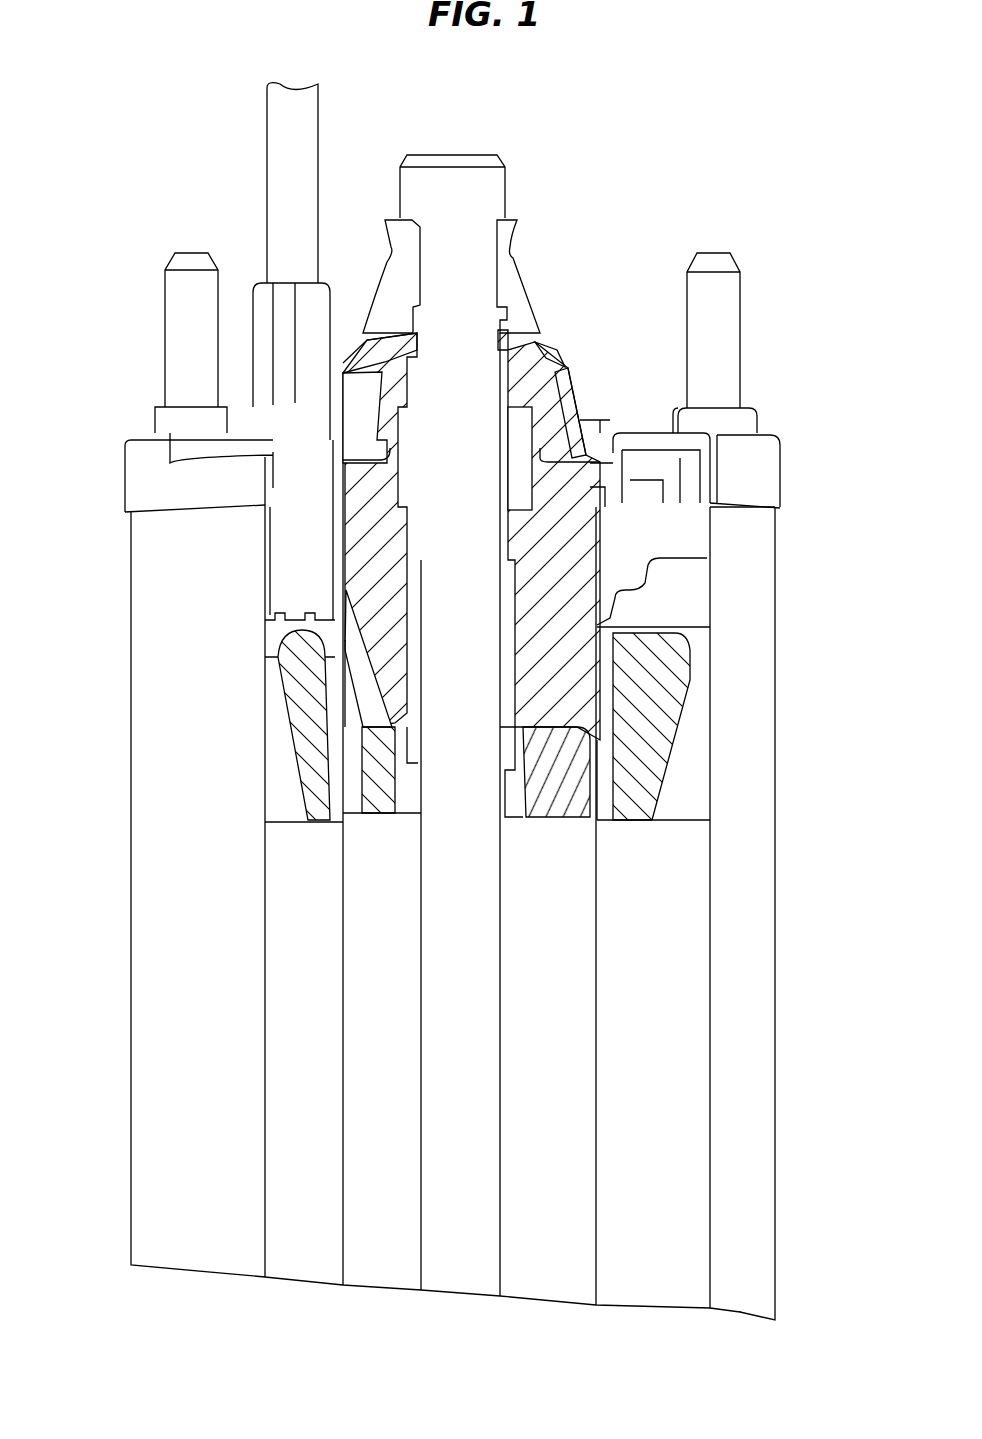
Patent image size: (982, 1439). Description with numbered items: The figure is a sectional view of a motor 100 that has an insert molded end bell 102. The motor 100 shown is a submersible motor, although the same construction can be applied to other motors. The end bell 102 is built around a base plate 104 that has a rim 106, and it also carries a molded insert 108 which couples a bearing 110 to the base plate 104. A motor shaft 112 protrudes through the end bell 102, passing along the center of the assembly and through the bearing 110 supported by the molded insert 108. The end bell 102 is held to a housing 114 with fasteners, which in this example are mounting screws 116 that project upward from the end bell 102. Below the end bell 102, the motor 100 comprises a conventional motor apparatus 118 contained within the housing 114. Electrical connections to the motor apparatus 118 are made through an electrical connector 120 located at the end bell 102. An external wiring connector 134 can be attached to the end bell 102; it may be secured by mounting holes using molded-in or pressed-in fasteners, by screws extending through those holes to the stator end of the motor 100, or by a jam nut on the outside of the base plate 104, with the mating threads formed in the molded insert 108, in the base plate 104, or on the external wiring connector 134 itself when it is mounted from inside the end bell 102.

The motor 100 is at (94, 730).
The insert molded end bell 102 is at (603, 418).
The base plate 104 is at (742, 408).
The rim 106 is at (783, 466).
The molded insert 108 is at (562, 544).
The bearing 110 is at (508, 660).
The motor shaft 112 is at (507, 185).
The housing 114 is at (775, 830).
The mounting screws 116 is at (165, 305).
The motor apparatus 118 is at (760, 1003).
The electrical connector 120 is at (270, 648).
The external wiring connector 134 is at (262, 312).